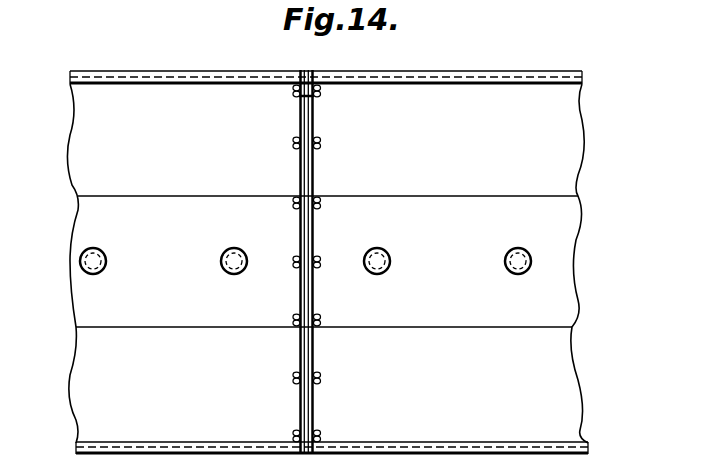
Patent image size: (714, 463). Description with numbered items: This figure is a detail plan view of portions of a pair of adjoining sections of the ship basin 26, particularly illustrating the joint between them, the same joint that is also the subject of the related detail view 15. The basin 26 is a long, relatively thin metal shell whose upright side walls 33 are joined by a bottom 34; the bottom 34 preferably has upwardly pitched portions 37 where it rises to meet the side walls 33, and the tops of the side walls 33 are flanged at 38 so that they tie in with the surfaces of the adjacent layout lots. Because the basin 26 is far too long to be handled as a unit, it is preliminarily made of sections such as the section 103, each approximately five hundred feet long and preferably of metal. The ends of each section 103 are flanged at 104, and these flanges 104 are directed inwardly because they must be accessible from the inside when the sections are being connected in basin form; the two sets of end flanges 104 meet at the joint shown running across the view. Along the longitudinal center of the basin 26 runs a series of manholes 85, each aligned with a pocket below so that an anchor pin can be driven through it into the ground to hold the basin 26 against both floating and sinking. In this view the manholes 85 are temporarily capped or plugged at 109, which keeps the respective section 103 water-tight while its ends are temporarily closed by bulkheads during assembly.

The clip fastener 15 is at (294, 378).
The basin 26 is at (557, 78).
The side walls 33 is at (124, 0).
The bottom 34 is at (562, 226).
The upwardly pitched portions 37 is at (566, 103).
The flange 38 is at (551, 72).
The manholes 85 is at (82, 254).
The section 103 is at (586, 133).
The flanges 104 is at (297, 93).
The cap or plug 109 is at (392, 263).